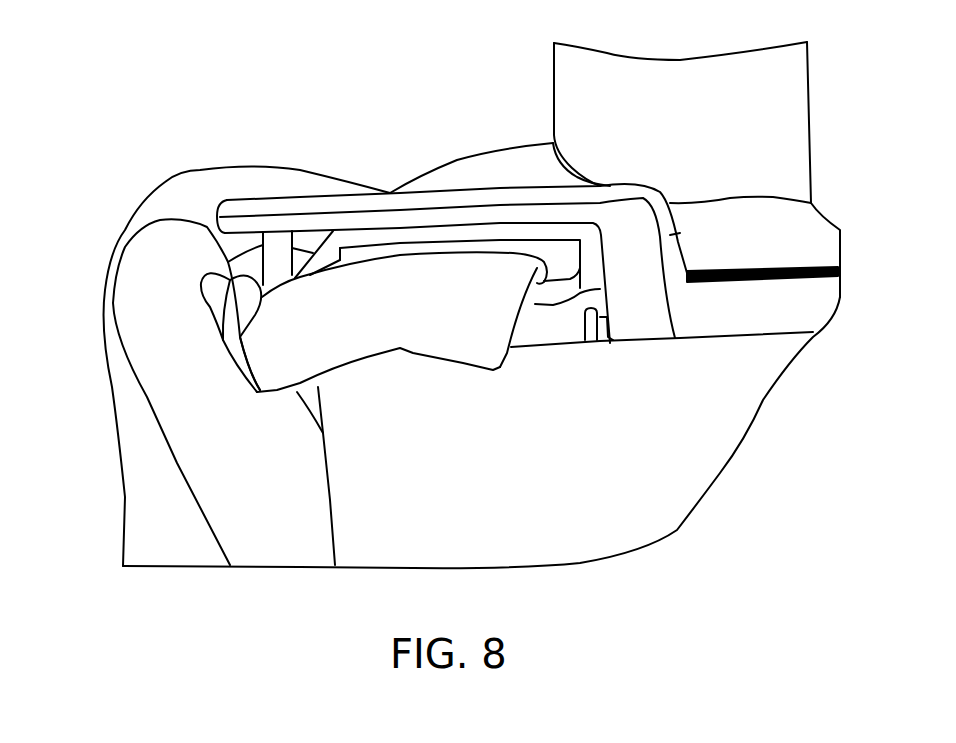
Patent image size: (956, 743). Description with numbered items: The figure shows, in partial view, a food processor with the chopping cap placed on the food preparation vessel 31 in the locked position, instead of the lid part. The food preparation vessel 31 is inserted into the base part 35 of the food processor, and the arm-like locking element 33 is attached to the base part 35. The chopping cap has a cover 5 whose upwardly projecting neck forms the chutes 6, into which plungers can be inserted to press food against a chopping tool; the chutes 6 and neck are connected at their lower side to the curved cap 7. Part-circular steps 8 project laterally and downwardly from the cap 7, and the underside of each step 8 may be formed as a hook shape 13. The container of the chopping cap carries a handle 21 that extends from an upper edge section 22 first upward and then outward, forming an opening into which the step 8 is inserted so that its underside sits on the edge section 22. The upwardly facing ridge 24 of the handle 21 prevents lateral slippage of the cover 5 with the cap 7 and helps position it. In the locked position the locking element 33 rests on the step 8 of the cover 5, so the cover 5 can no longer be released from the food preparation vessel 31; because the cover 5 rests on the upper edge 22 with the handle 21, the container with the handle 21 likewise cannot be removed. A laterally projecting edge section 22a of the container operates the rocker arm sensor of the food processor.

The cover 5 is at (508, 135).
The chute 6 is at (568, 41).
The cap 7 is at (467, 172).
The step 8 is at (547, 293).
The hook shape 13 is at (585, 310).
The handle 21 is at (283, 208).
The upper edge section 22 is at (607, 330).
The laterally projecting edge section 22a is at (773, 317).
The ridge 24 is at (672, 235).
The food preparation vessel 31 is at (687, 488).
The arm-like locking element 33 is at (290, 363).
The base part 35 is at (187, 448).